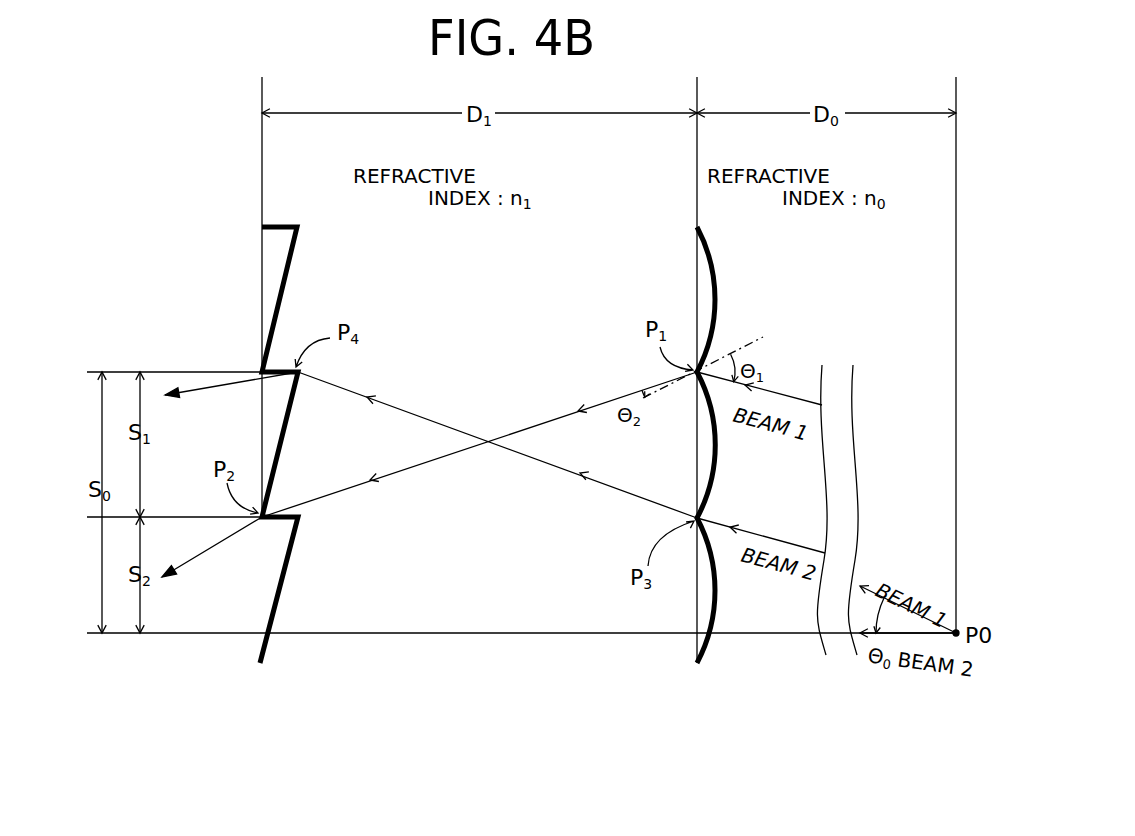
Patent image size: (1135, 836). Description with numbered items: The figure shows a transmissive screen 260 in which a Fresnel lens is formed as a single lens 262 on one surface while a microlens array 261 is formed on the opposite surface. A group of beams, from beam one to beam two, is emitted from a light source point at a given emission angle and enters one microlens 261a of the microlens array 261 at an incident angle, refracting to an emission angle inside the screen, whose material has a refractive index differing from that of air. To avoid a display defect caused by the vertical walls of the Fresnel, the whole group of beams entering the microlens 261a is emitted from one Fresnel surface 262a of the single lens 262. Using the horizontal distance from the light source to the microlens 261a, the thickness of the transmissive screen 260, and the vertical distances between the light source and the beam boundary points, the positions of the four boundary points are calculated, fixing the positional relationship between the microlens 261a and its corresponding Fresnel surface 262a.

The transmissive screen 260 is at (507, 416).
The microlens array 261 is at (776, 370).
The microlens 261a is at (749, 445).
The single lens 262 is at (269, 445).
The Fresnel surface 262a is at (300, 413).